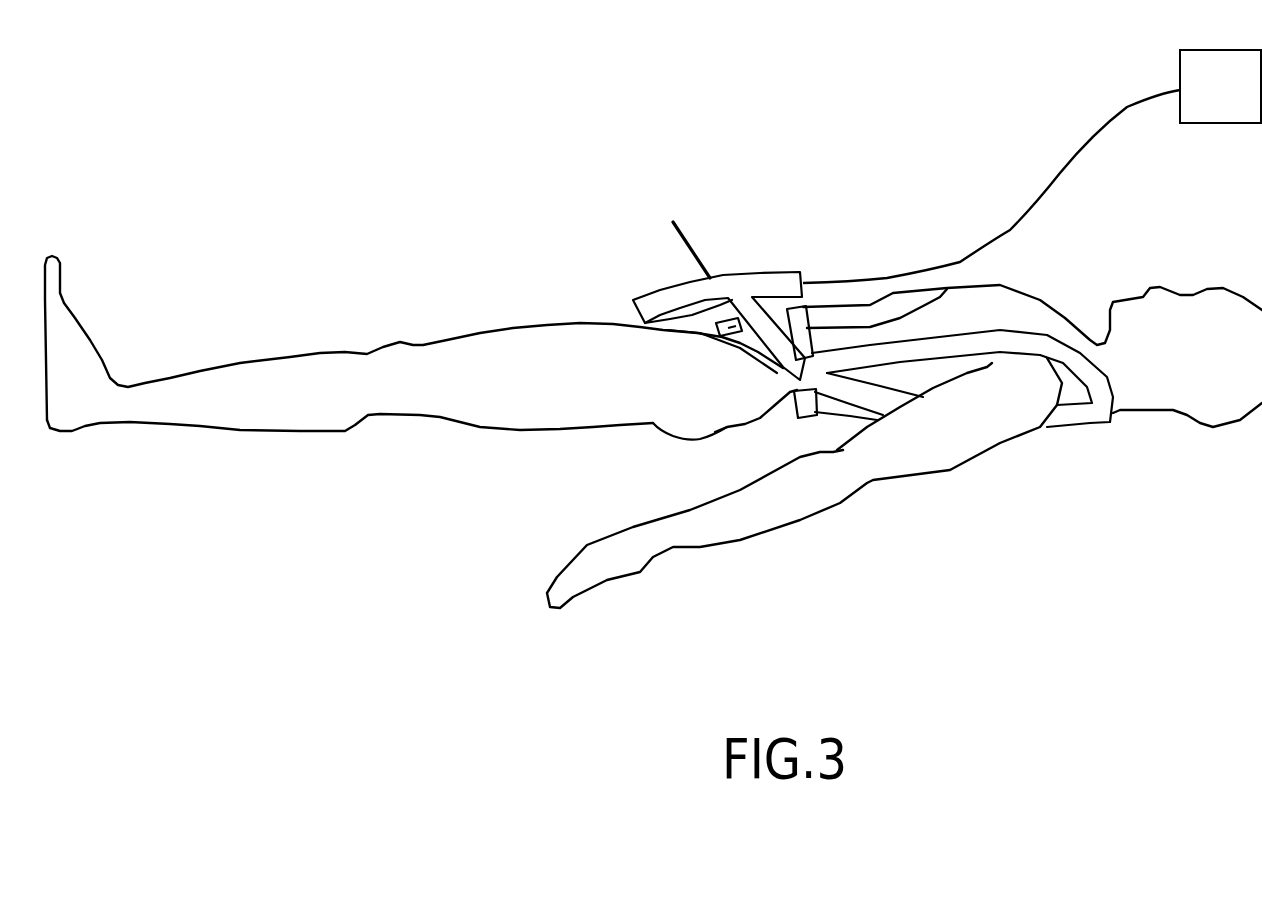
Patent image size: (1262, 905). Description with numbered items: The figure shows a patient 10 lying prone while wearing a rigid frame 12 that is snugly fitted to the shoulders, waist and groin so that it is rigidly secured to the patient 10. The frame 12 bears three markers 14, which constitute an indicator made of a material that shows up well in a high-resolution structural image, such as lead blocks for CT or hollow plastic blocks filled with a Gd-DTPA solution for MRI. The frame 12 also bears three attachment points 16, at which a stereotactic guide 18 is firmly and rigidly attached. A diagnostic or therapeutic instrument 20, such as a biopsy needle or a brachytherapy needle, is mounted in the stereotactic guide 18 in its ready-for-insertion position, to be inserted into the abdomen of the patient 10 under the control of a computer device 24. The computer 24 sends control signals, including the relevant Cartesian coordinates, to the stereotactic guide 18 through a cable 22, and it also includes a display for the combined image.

The patient 10 is at (568, 391).
The rigid frame 12 is at (673, 438).
The markers 14 is at (731, 337).
The attachment points 16 is at (633, 324).
The stereotactic guide 18 is at (778, 280).
The diagnostic or therapeutic instrument 20 is at (693, 250).
The cable 22 is at (1035, 205).
The computer device 24 is at (1252, 105).